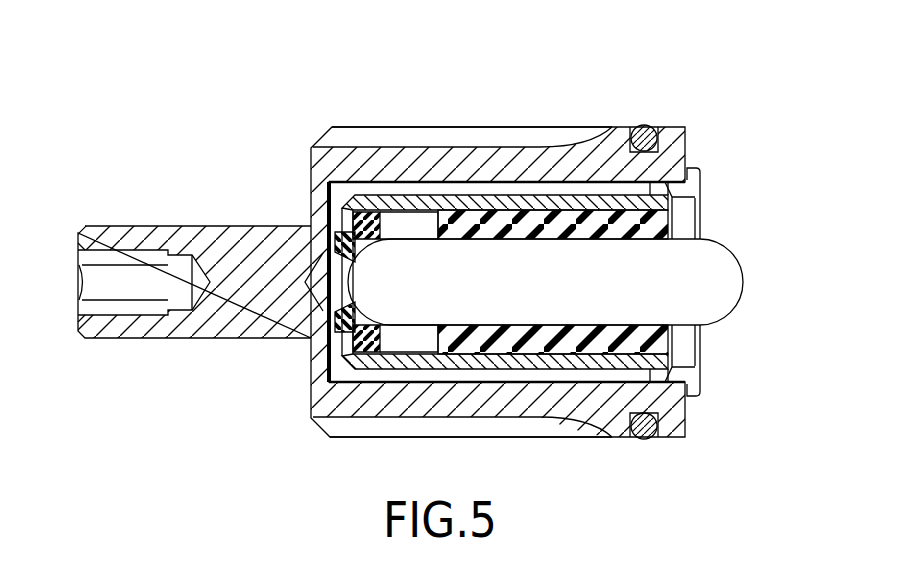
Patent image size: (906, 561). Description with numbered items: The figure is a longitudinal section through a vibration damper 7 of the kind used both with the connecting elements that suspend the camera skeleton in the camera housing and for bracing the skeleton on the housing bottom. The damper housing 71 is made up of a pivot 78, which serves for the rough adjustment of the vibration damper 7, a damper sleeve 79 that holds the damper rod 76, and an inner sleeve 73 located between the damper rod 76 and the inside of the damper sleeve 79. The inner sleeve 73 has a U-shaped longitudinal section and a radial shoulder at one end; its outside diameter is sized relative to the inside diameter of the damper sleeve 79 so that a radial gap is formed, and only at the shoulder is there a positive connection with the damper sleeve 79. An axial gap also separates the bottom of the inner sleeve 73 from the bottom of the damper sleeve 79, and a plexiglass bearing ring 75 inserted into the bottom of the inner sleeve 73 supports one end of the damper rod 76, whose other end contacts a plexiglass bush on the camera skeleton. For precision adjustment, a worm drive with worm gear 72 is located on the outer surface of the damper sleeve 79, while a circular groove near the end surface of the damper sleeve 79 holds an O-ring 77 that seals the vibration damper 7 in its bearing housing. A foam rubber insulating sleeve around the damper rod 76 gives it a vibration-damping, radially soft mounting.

The vibration damper 7 is at (697, 113).
The damper housing 71 is at (313, 150).
The worm gear 72 is at (372, 432).
The inner sleeve 73 is at (702, 176).
The plexiglass bearing ring 75 is at (334, 352).
The damper rod 76 is at (540, 222).
The O-ring 77 is at (640, 440).
The pivot 78 is at (149, 330).
The damper sleeve 79 is at (397, 127).